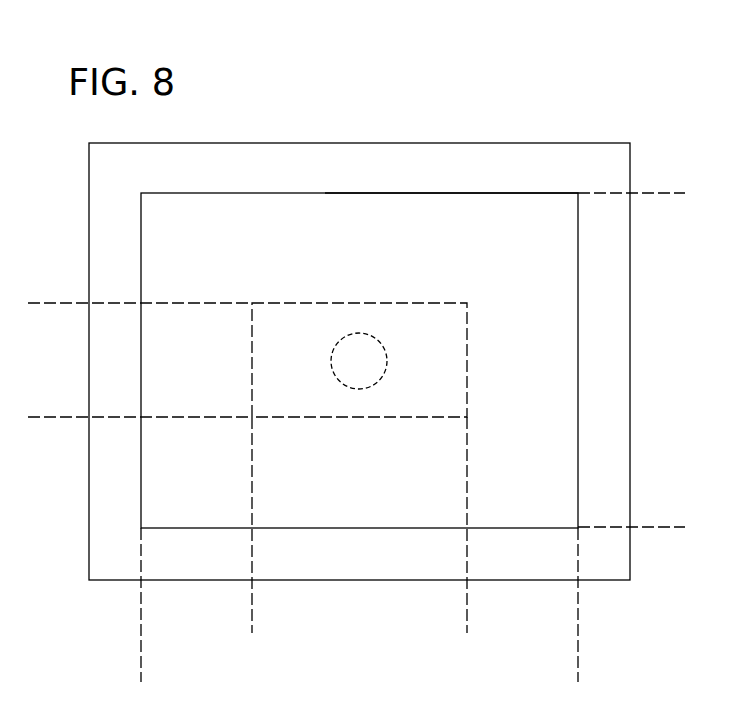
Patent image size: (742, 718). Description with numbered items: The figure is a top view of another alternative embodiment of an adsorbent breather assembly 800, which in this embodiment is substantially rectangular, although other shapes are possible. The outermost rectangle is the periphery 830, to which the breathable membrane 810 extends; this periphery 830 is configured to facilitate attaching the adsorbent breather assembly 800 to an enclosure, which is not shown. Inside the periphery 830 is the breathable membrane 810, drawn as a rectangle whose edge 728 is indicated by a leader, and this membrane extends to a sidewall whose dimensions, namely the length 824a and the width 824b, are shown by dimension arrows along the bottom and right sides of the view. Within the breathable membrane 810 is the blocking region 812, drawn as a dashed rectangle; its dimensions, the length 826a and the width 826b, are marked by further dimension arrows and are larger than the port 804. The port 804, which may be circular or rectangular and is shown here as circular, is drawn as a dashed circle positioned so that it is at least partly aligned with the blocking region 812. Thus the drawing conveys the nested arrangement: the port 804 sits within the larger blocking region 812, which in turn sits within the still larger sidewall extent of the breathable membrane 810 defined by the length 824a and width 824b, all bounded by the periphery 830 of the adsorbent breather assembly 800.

The adsorbent breather assembly 800 is at (585, 125).
The edge of panel 728 is at (325, 193).
The periphery 830 is at (130, 238).
The breathable membrane 810 is at (223, 233).
The blocking region 812 is at (357, 303).
The port 804 is at (335, 345).
The length 824a is at (578, 663).
The width 824b is at (673, 527).
The length 826a is at (467, 615).
The width 826b is at (49, 303).